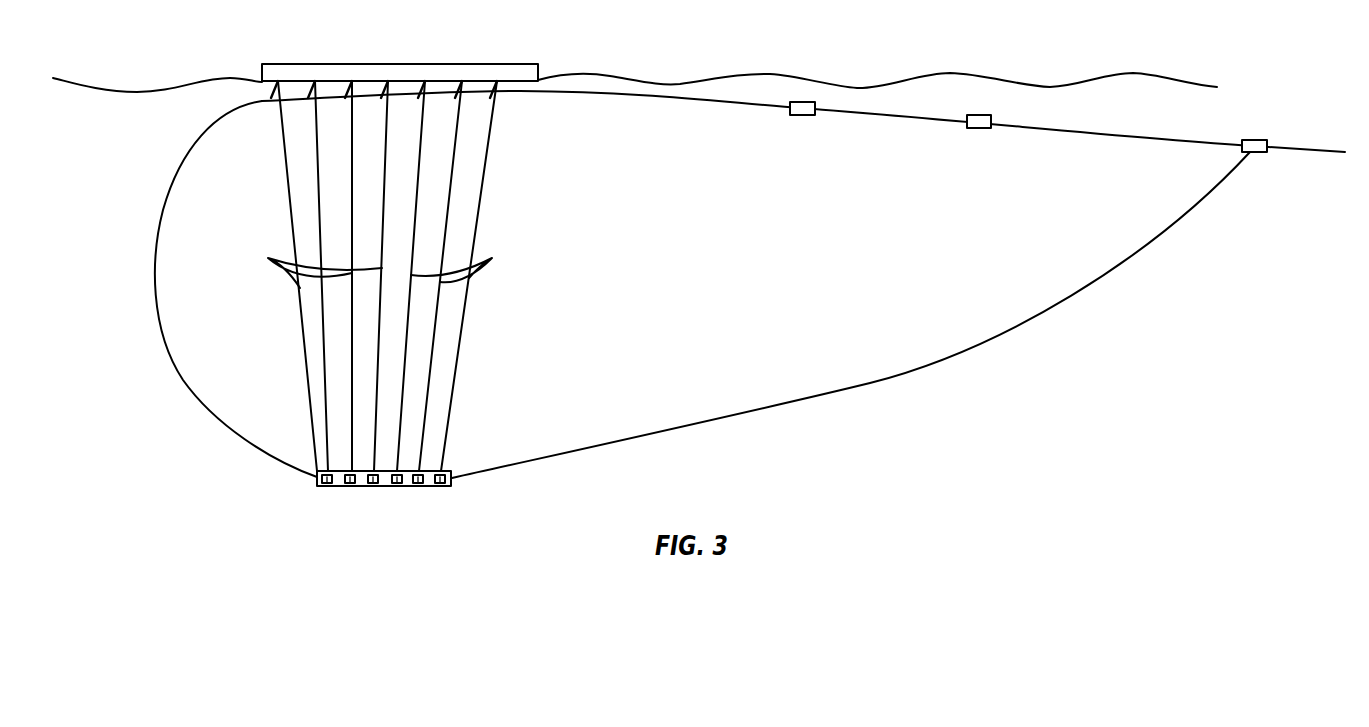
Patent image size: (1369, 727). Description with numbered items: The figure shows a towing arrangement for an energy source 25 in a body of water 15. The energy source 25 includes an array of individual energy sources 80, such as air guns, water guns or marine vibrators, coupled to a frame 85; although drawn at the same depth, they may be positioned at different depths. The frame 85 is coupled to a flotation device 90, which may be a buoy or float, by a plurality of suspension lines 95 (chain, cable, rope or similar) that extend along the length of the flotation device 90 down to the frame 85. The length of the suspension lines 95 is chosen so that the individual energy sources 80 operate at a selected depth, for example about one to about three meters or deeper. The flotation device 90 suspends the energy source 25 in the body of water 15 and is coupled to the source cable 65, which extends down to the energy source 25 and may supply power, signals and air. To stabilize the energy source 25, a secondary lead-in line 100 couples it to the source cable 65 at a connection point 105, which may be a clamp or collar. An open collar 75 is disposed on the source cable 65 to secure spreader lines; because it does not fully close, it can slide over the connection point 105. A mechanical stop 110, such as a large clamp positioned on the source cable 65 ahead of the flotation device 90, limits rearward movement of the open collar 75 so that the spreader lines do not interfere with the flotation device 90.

The body of water 15 is at (778, 261).
The energy source 25 is at (366, 494).
The source cable 65 is at (1115, 131).
The open collar 75 is at (979, 115).
The individual energy sources 80 is at (326, 487).
The frame 85 is at (337, 487).
The flotation device 90 is at (400, 64).
The suspension lines 95 is at (268, 258).
The secondary lead-in line 100 is at (865, 385).
The connection point 105 is at (1264, 140).
The mechanical stop 110 is at (803, 102).